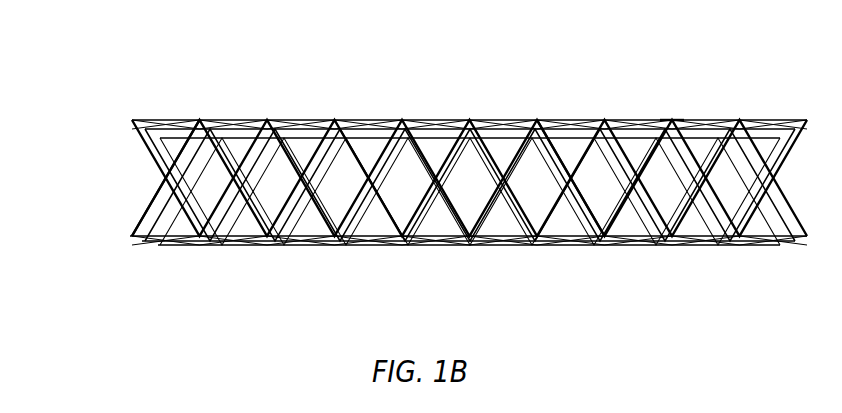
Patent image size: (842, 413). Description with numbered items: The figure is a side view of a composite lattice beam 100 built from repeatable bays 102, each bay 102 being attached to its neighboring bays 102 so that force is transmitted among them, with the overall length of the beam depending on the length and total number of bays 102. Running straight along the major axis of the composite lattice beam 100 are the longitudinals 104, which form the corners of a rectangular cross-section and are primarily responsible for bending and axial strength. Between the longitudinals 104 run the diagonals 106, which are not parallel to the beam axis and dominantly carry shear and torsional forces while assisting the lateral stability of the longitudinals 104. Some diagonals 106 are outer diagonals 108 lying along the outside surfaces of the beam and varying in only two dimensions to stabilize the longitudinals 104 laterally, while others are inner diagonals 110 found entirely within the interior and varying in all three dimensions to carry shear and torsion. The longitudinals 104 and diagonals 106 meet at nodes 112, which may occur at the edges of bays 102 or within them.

The composite lattice beam 100 is at (100, 93).
The bay 102 is at (296, 114).
The longitudinal 104 is at (438, 120).
The diagonal 106 is at (557, 143).
The outer diagonal 108 is at (180, 222).
The inner diagonal 110 is at (185, 152).
The node 112 is at (670, 122).